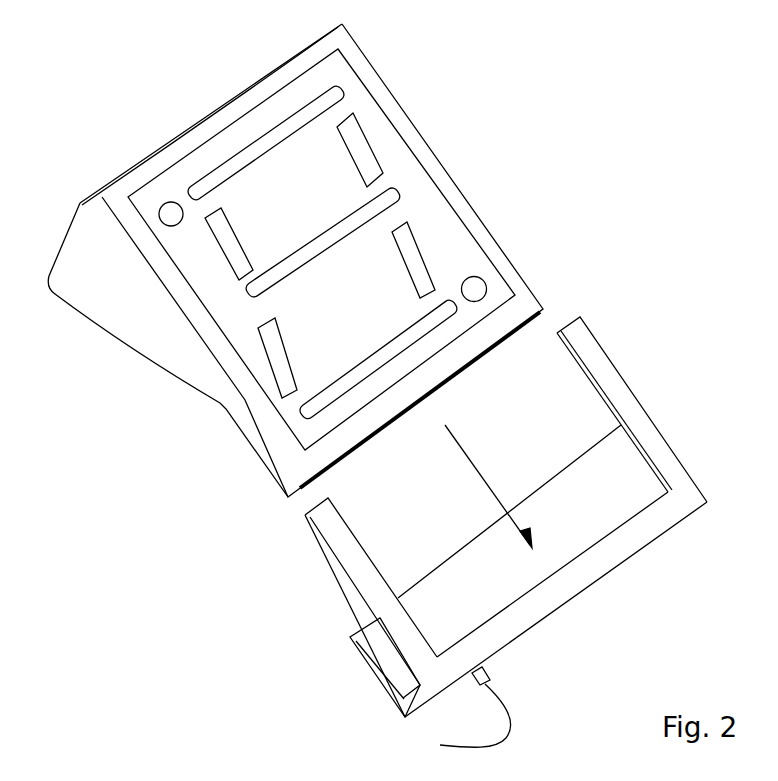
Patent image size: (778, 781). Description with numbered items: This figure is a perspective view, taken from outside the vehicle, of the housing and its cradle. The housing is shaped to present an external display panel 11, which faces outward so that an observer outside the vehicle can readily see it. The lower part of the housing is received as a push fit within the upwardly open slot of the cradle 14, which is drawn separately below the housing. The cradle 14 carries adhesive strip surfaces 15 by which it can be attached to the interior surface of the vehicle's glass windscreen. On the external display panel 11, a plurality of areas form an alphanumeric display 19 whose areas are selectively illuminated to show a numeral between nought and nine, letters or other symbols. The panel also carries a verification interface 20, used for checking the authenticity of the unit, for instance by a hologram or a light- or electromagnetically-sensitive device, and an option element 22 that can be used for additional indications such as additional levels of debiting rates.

The external display panel 11 is at (407, 185).
The cradle 14 is at (620, 370).
The adhesive strip surfaces 15 is at (342, 541).
The alphanumeric display 19 is at (330, 100).
The verification interface 20 is at (475, 286).
The option element 22 is at (165, 212).